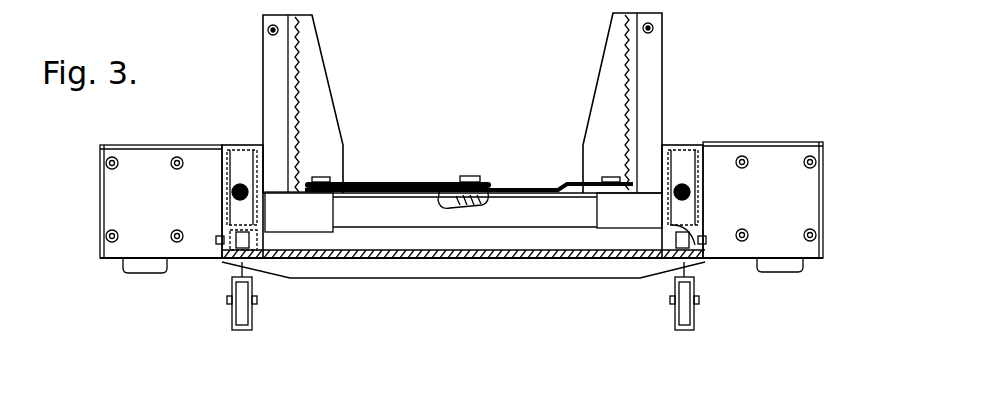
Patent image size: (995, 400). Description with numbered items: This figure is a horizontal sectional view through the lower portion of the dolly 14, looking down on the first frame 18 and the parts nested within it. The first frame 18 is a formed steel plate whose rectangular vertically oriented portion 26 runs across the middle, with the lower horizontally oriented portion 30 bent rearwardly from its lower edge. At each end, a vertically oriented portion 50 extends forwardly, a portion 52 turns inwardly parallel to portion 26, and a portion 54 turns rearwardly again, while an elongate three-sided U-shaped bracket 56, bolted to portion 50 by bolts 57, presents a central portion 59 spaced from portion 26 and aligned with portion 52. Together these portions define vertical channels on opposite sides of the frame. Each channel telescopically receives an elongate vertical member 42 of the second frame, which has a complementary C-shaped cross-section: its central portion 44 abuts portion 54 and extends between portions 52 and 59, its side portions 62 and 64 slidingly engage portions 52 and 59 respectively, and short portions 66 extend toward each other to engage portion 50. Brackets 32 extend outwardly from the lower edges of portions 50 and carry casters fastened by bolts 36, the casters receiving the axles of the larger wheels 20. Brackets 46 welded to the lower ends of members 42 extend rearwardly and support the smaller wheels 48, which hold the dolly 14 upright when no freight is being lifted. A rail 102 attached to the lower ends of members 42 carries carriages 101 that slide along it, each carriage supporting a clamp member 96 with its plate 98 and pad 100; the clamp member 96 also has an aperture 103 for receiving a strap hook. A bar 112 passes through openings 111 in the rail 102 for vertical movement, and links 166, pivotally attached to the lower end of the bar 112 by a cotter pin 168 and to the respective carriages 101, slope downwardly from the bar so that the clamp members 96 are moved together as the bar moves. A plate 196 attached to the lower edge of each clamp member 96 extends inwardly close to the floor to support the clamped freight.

The dolly 14 is at (676, 72).
The first frame 18 is at (413, 279).
The wheels 20 is at (133, 271).
The rectangular vertically oriented portion 26 is at (349, 284).
The lower horizontally oriented portion 30 is at (600, 280).
The brackets 32 is at (105, 190).
The bolts 36 is at (172, 158).
The elongate vertical members 42 is at (250, 172).
The central portion 44 is at (265, 208).
The brackets 46 is at (232, 280).
The wheels 48 is at (237, 320).
The vertically oriented portions 50 is at (228, 176).
The vertically oriented portions 52 is at (248, 145).
The vertically oriented portions 54 is at (265, 143).
The U-shaped brackets 56 is at (665, 268).
The bolts 57 is at (216, 238).
The central portion 59 is at (700, 213).
The side portion 62 is at (700, 148).
The side portion 64 is at (705, 195).
The portions 66 is at (233, 145).
The clamp members 96 is at (270, 50).
The plates 98 is at (653, 92).
The pads 100 is at (612, 22).
The carriages 101 is at (333, 213).
The rail 102 is at (353, 263).
The clamp member aperture 103 is at (268, 30).
The openings 111 is at (437, 182).
The bar 112 is at (503, 187).
The links 166 is at (383, 182).
The cotter pin 168 is at (470, 175).
The plate 196 is at (316, 40).